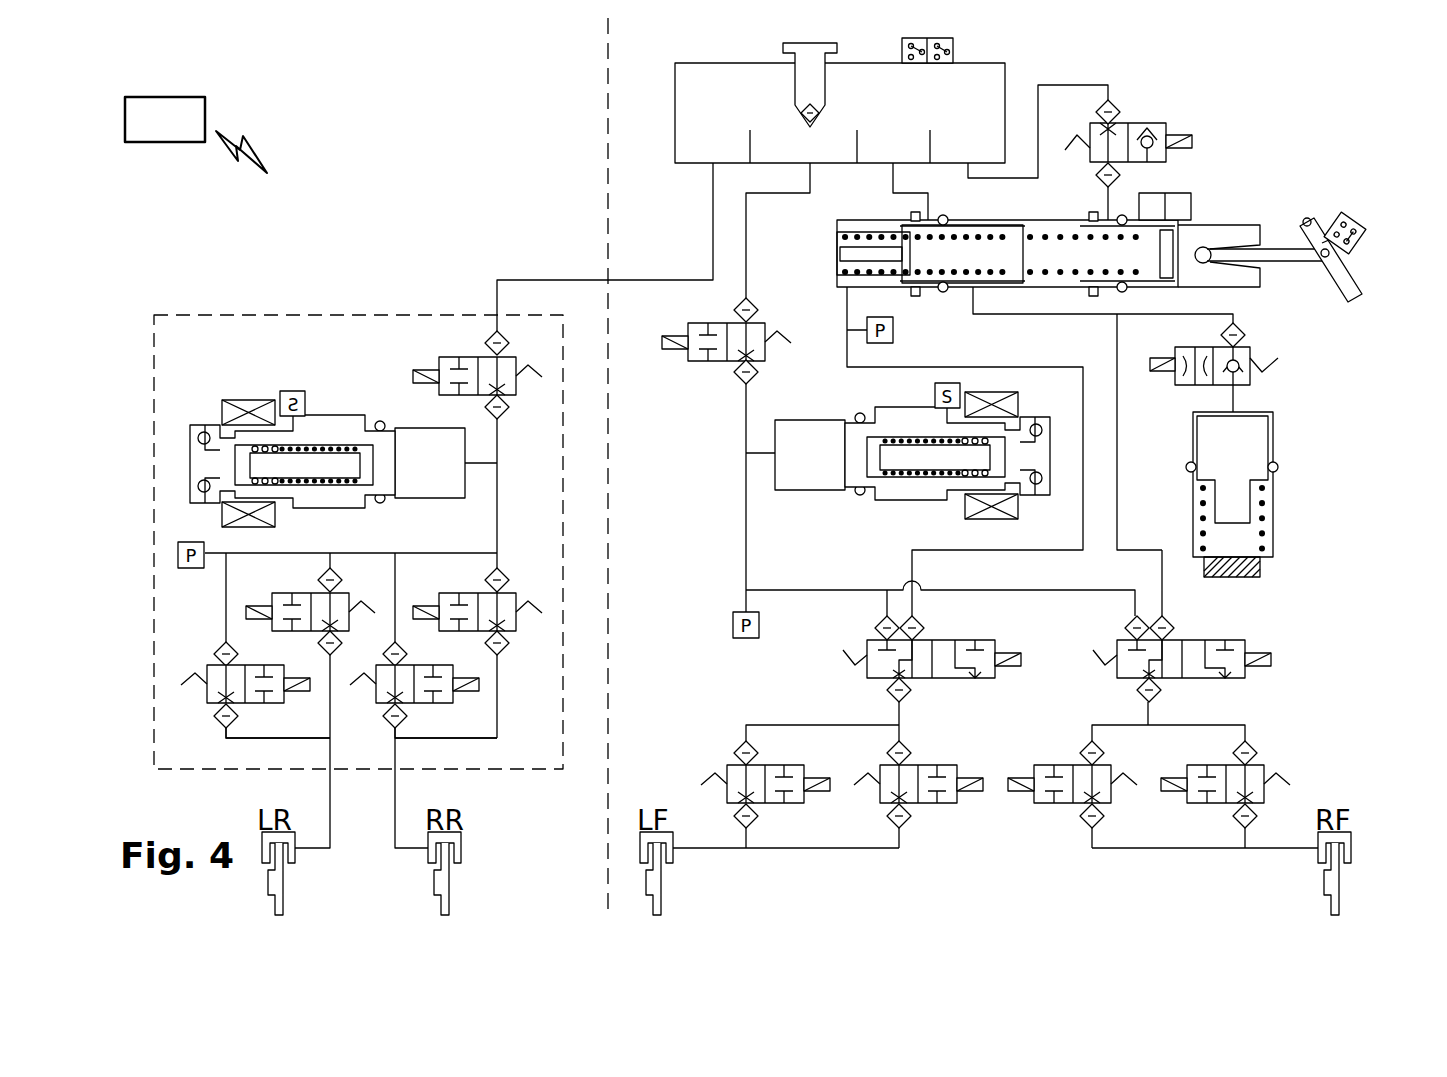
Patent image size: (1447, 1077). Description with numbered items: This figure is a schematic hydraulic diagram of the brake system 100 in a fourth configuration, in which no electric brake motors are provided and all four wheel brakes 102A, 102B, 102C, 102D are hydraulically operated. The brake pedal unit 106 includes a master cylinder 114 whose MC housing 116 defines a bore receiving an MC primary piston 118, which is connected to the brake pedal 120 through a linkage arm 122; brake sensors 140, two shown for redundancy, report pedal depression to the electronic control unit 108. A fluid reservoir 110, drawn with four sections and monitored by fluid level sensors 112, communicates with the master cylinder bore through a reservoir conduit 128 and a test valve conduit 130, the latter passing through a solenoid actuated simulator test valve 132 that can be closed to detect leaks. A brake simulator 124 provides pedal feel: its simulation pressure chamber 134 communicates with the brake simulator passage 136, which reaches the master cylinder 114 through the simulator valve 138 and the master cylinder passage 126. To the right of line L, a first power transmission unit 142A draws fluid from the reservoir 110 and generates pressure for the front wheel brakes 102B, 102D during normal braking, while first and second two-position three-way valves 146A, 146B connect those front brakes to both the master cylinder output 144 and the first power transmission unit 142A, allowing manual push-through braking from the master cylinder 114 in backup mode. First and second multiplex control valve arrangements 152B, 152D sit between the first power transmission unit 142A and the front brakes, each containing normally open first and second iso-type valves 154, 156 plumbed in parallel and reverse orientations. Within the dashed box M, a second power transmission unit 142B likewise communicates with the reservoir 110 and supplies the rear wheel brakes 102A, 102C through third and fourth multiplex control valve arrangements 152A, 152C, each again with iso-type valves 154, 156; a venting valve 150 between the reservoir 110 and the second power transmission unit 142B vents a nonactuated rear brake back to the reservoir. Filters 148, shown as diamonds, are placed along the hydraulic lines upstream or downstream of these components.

The brake system 100 is at (1272, 68).
The wheel brake 102A is at (460, 862).
The wheel brake 102B is at (672, 862).
The wheel brake 102C is at (295, 862).
The wheel brake 102D is at (1350, 848).
The brake pedal unit 106 is at (1255, 168).
The electronic control unit 108 is at (188, 133).
The fluid reservoir 110 is at (985, 62).
The fluid level sensor 112 is at (940, 38).
The master cylinder 114 is at (832, 263).
The MC housing 116 is at (1035, 222).
The MC primary piston 118 is at (1205, 243).
The brake pedal 120 is at (1352, 264).
The linkage arm 122 is at (1275, 261).
The brake simulator 124 is at (1292, 445).
The master cylinder passage 126 is at (1028, 315).
The reservoir conduit 128 is at (893, 185).
The test valve conduit 130 is at (1102, 180).
The simulator test valve 132 is at (1152, 112).
The simulation pressure chamber 134 is at (1262, 412).
The brake simulator passage 136 is at (1150, 314).
The simulator valve 138 is at (1178, 388).
The brake sensor 140 is at (1173, 193).
The first power transmission unit 142A is at (850, 415).
The second power transmission unit 142B is at (370, 398).
The master cylinder output 144 is at (935, 367).
The first two-position three-way valve 146A is at (994, 632).
The second two-position three-way valve 146B is at (1224, 632).
The filter 148 is at (503, 332).
The venting valve 150 is at (712, 368).
The third multiplex control valve arrangement 152A is at (542, 695).
The first multiplex control valve arrangement 152B is at (848, 852).
The fourth multiplex control valve arrangement 152C is at (200, 736).
The second multiplex control valve arrangement 152D is at (1150, 852).
The first iso-type valve 154 is at (255, 703).
The second iso-type valve 156 is at (318, 593).